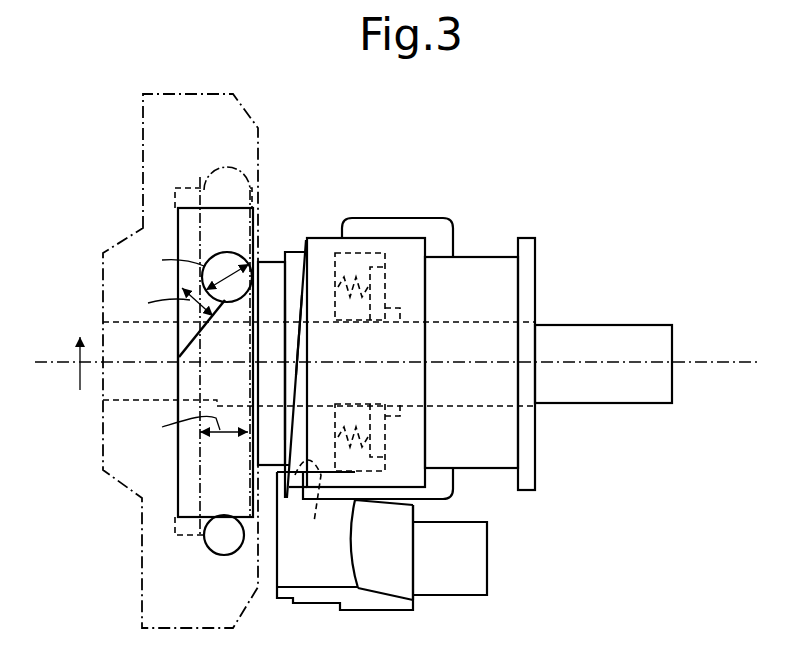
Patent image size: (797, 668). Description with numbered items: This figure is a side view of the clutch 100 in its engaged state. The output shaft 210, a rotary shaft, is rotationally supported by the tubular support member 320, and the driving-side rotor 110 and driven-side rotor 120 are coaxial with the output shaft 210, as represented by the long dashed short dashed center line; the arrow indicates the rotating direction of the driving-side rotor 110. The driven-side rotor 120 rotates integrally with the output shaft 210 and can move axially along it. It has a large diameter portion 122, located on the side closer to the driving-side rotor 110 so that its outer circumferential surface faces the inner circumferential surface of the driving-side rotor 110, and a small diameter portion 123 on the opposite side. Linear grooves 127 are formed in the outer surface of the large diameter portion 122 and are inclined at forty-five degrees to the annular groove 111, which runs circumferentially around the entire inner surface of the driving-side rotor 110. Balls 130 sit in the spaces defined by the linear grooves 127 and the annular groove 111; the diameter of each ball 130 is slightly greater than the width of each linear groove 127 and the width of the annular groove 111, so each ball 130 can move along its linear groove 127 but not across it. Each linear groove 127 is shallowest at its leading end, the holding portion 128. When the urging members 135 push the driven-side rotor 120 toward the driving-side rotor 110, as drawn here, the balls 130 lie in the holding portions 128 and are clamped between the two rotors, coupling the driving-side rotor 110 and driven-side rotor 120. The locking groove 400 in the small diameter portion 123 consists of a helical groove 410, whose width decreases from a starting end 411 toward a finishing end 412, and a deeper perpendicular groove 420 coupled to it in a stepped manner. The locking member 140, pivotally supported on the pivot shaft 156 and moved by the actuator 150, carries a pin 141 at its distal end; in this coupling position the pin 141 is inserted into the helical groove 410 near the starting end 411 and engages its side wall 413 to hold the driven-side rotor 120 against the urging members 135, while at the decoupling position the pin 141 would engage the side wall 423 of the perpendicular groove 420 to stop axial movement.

The clutch 100 is at (605, 154).
The driving-side rotor 110 is at (143, 95).
The annular groove 111 is at (200, 178).
The driven-side rotor 120 is at (415, 237).
The large diameter portion 122 is at (179, 383).
The small diameter portion 123 is at (375, 237).
The linear groove 127 is at (190, 339).
The holding portion 128 is at (216, 311).
The ball 130 is at (222, 251).
The urging member 135 is at (387, 295).
The locking member 140 is at (406, 575).
The pin 141 is at (309, 449).
The actuator 150 is at (446, 217).
The pivot shaft 156 is at (488, 541).
The output shaft 210 is at (672, 340).
The support member 320 is at (536, 278).
The locking groove 400 is at (377, 153).
The helical groove 410 is at (296, 252).
The starting end 411 is at (345, 541).
The finishing end 412 is at (291, 473).
The side wall 413 is at (302, 332).
The perpendicular groove 420 is at (267, 260).
The side wall 423 is at (280, 386).